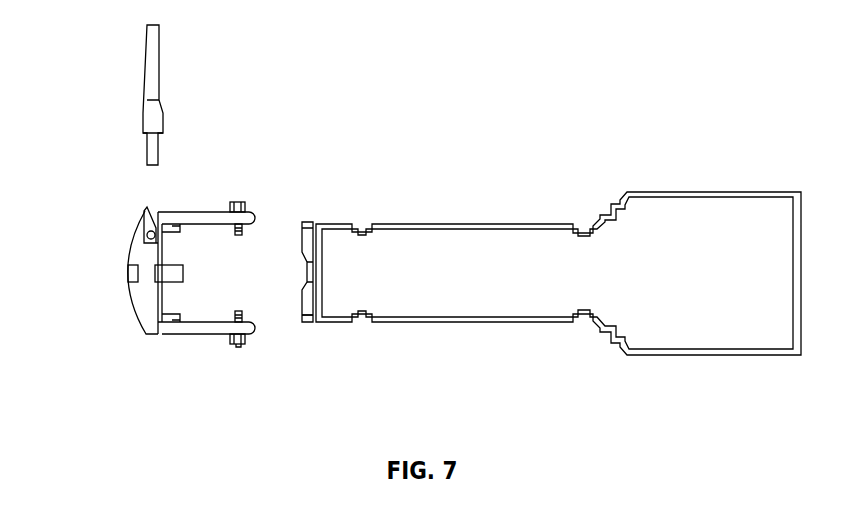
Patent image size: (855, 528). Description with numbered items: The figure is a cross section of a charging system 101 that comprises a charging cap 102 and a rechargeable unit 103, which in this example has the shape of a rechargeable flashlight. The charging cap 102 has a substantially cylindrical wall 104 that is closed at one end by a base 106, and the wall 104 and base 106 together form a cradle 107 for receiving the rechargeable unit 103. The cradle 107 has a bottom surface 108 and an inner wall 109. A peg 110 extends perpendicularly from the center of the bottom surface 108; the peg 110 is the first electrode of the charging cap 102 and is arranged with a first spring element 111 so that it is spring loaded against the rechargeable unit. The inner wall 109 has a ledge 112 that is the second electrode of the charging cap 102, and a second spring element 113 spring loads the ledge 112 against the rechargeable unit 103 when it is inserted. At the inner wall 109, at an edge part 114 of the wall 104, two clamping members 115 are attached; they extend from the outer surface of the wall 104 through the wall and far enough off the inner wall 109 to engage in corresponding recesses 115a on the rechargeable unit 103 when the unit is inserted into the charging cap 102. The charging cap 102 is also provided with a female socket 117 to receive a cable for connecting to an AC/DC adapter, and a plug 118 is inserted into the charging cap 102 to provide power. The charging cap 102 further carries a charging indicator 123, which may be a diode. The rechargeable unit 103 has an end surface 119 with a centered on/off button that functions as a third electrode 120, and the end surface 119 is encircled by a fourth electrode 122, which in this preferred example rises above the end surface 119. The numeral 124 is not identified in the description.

The charging system 101 is at (641, 80).
The charging cap 102 is at (174, 282).
The rechargeable unit 103 is at (478, 323).
The cylindrical wall 104 is at (215, 212).
The base 106 is at (133, 246).
The cradle 107 is at (212, 300).
The bottom surface 108 is at (163, 252).
The inner wall 109 is at (243, 232).
The peg 110 is at (181, 280).
The first spring element 111 is at (160, 277).
The ledge 112 is at (173, 225).
The second spring element 113 is at (172, 322).
The edge part 114 is at (243, 233).
The clamping members 115 is at (240, 308).
The recesses 115a is at (364, 225).
The female socket 117 is at (148, 210).
The plug 118 is at (151, 155).
The end surface 119 is at (308, 322).
The third electrode 120 is at (311, 271).
The fourth electrode 122 is at (306, 223).
The charging indicator 123 is at (129, 272).
The aperture 124 is at (346, 323).